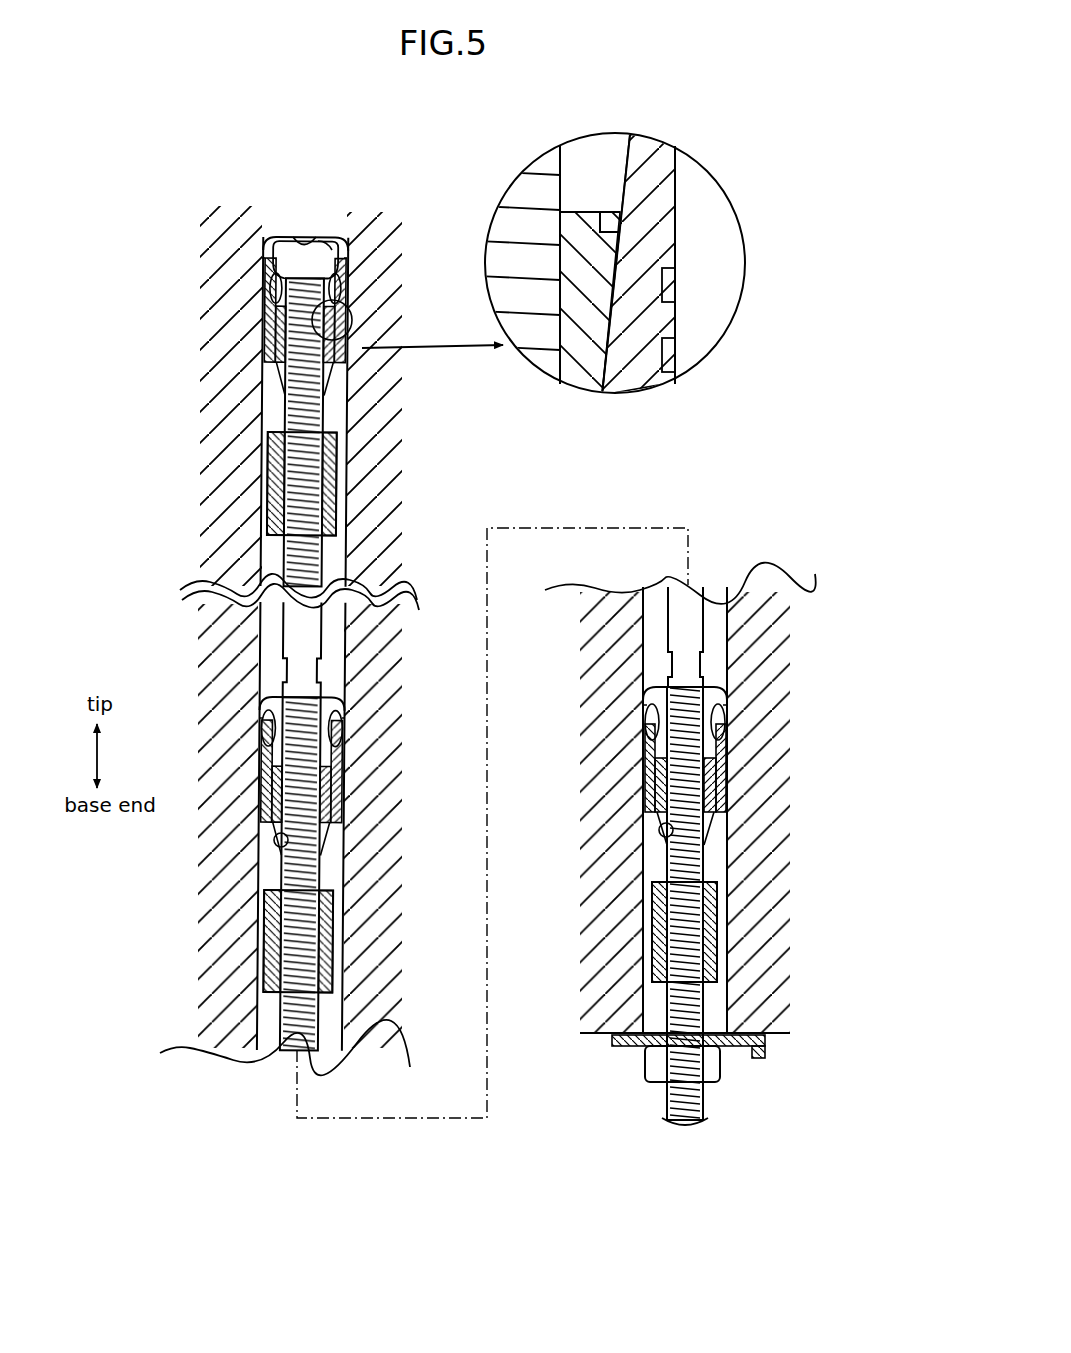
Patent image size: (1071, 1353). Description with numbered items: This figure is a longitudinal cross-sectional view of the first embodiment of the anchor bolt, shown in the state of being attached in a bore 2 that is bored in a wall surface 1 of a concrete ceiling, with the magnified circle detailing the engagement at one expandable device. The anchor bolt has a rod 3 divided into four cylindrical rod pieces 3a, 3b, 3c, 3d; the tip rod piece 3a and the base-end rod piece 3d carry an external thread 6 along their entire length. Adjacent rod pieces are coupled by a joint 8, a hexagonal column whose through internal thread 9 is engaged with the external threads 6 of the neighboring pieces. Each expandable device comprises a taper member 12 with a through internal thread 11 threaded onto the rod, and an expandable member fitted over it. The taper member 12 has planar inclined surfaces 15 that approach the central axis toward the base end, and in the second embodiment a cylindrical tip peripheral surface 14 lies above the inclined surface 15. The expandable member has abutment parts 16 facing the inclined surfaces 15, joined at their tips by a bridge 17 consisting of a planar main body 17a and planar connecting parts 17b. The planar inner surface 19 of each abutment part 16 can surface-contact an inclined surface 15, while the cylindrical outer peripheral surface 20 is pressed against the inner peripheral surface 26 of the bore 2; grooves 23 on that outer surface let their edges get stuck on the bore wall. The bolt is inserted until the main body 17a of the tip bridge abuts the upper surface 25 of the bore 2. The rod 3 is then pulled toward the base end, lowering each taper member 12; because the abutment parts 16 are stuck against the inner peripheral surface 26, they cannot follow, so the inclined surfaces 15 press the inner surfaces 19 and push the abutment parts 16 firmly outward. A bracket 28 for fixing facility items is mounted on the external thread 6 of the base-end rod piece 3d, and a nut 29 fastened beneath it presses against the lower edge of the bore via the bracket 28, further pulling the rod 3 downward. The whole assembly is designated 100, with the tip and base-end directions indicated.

The wall surface 1 is at (605, 1034).
The bore 2 is at (338, 662).
The rod 3 is at (498, 687).
The tip rod piece 3a is at (260, 417).
The intermediate rod piece 3b is at (340, 640).
The intermediate rod piece 3c is at (740, 595).
The base-end rod piece 3d is at (703, 1105).
The external thread 6 is at (323, 390).
The joint 8 is at (262, 485).
The internal thread 9 is at (337, 480).
The internal thread 11 is at (283, 385).
The taper member 12 is at (265, 336).
The tip peripheral surface 14 is at (672, 208).
The inclined surface 15 is at (275, 333).
The abutment part 16 is at (262, 307).
The bridge 17 is at (288, 236).
The main body 17a is at (322, 240).
The connecting part 17b is at (265, 258).
The inner surface 19 is at (262, 258).
The outer peripheral surface 20 is at (270, 290).
The groove 23 is at (268, 356).
The upper surface 25 is at (302, 245).
The inner peripheral surface 26 is at (261, 698).
The bracket 28 is at (630, 1046).
The nut 29 is at (722, 1060).
The anchor assembly 100 is at (150, 528).